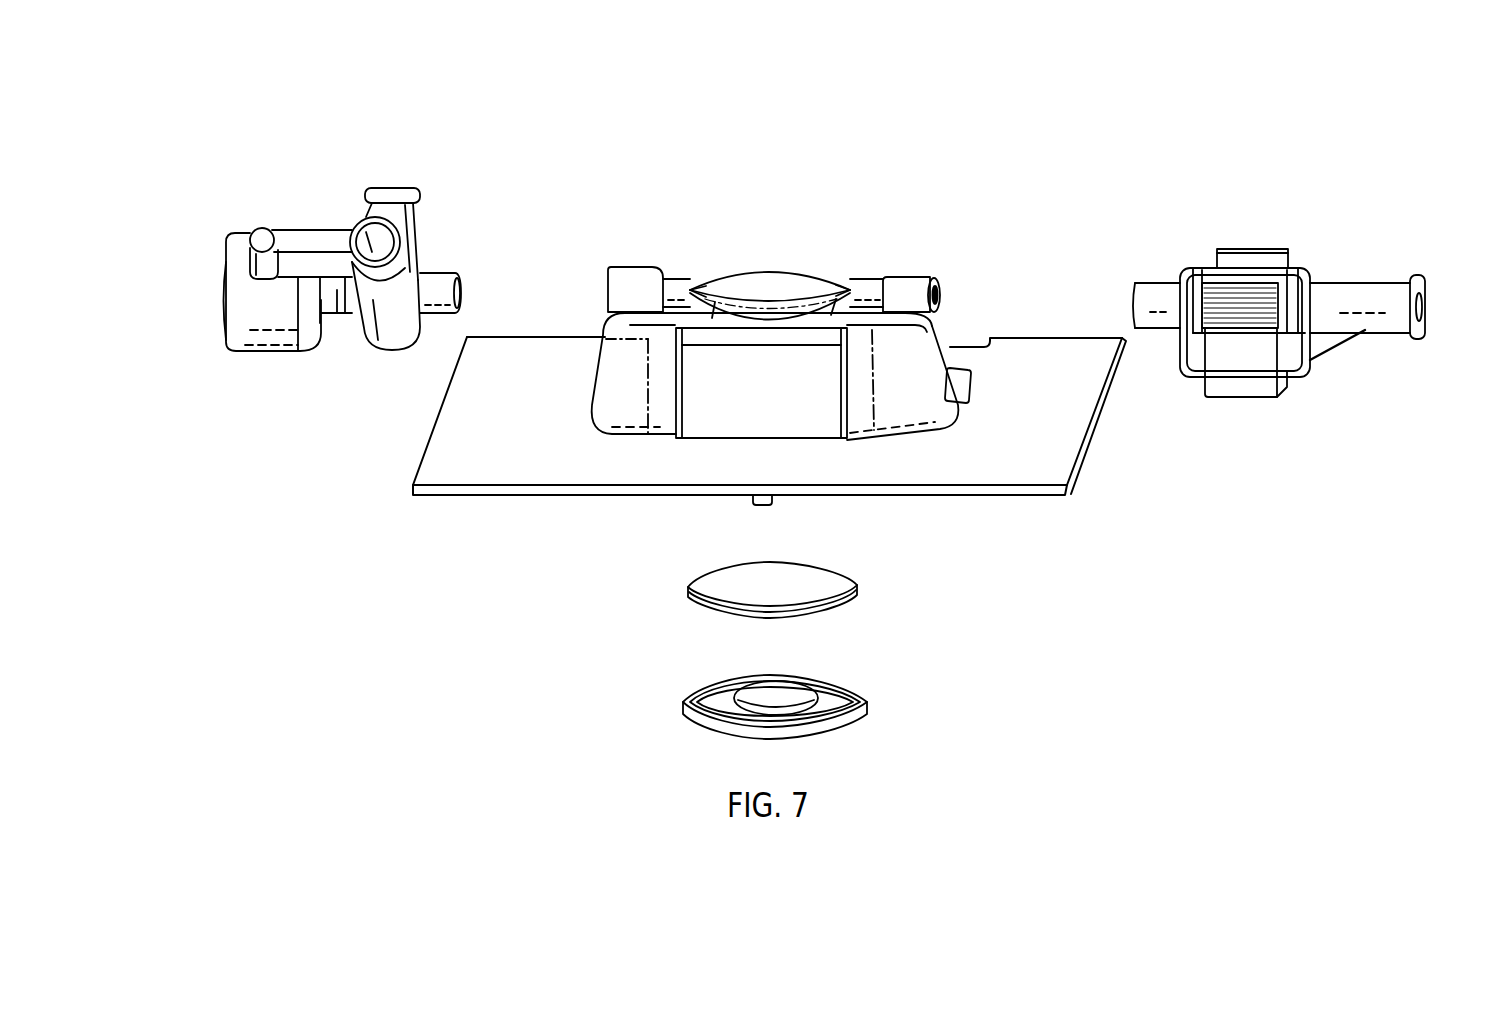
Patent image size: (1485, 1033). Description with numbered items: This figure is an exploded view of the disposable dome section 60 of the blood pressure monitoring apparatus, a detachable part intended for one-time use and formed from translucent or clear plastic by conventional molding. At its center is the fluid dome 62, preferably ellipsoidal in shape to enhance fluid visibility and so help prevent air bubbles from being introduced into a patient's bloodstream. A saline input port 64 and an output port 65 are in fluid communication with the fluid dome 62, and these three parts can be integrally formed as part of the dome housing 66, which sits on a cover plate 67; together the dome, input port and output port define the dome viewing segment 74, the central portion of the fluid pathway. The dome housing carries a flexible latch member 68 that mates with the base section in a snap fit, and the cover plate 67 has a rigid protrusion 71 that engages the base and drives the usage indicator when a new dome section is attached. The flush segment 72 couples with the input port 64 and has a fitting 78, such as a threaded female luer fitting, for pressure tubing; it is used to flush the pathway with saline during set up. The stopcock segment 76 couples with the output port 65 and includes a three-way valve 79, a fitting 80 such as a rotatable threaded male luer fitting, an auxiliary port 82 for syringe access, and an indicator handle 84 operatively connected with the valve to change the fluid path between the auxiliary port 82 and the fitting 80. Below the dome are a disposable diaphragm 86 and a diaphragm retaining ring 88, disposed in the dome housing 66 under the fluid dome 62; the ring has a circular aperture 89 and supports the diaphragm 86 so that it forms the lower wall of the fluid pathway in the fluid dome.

The disposable dome section 60 is at (476, 622).
The fluid dome 62 is at (768, 287).
The saline input port 64 is at (940, 297).
The output port 65 is at (605, 283).
The dome housing 66 is at (905, 392).
The cover plate 67 is at (1070, 418).
The flexible latch member 68 is at (802, 407).
The rigid protrusion 71 is at (765, 503).
The flush segment 72 is at (1305, 287).
The dome viewing segment 74 is at (548, 238).
The stopcock segment 76 is at (307, 266).
The fitting 78 is at (1412, 278).
The three-way valve 79 is at (380, 315).
The fitting 80 is at (226, 243).
The auxiliary port 82 is at (387, 185).
The indicator handle 84 is at (260, 236).
The disposable diaphragm 86 is at (797, 580).
The diaphragm retaining ring 88 is at (817, 679).
The circular aperture 89 is at (785, 700).